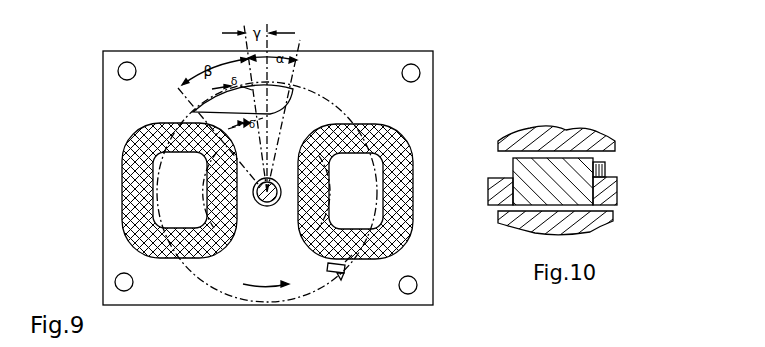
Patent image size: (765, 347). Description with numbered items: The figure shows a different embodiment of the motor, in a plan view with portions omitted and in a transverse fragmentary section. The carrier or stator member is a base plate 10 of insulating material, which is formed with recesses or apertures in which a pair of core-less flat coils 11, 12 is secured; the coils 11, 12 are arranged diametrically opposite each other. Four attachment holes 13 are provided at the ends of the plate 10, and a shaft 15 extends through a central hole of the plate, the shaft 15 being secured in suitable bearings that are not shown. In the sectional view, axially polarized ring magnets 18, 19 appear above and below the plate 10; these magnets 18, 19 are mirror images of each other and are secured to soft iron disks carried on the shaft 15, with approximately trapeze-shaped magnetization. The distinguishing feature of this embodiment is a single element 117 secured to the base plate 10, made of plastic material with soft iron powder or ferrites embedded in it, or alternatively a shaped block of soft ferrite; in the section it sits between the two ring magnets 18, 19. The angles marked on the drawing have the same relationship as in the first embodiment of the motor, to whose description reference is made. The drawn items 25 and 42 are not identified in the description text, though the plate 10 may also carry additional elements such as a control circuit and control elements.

In FIG. 9, the base plate 10 is at (370, 63).
In FIG. 10, the base plate 10 is at (607, 187).
In FIG. 9, the flat coil 11 is at (124, 173).
In FIG. 9, the flat coil 12 is at (413, 182).
In FIG. 9, the attachment holes 13 is at (420, 73).
In FIG. 9, the shaft 15 is at (262, 207).
In FIG. 10, the ring magnet 18 is at (598, 222).
In FIG. 10, the ring magnet 19 is at (585, 138).
In FIG. 9, the direction of rotation 25 is at (253, 273).
In FIG. 9, the stop element 42 is at (342, 280).
In FIG. 9, the element 117 is at (293, 89).
In FIG. 10, the element 117 is at (537, 167).